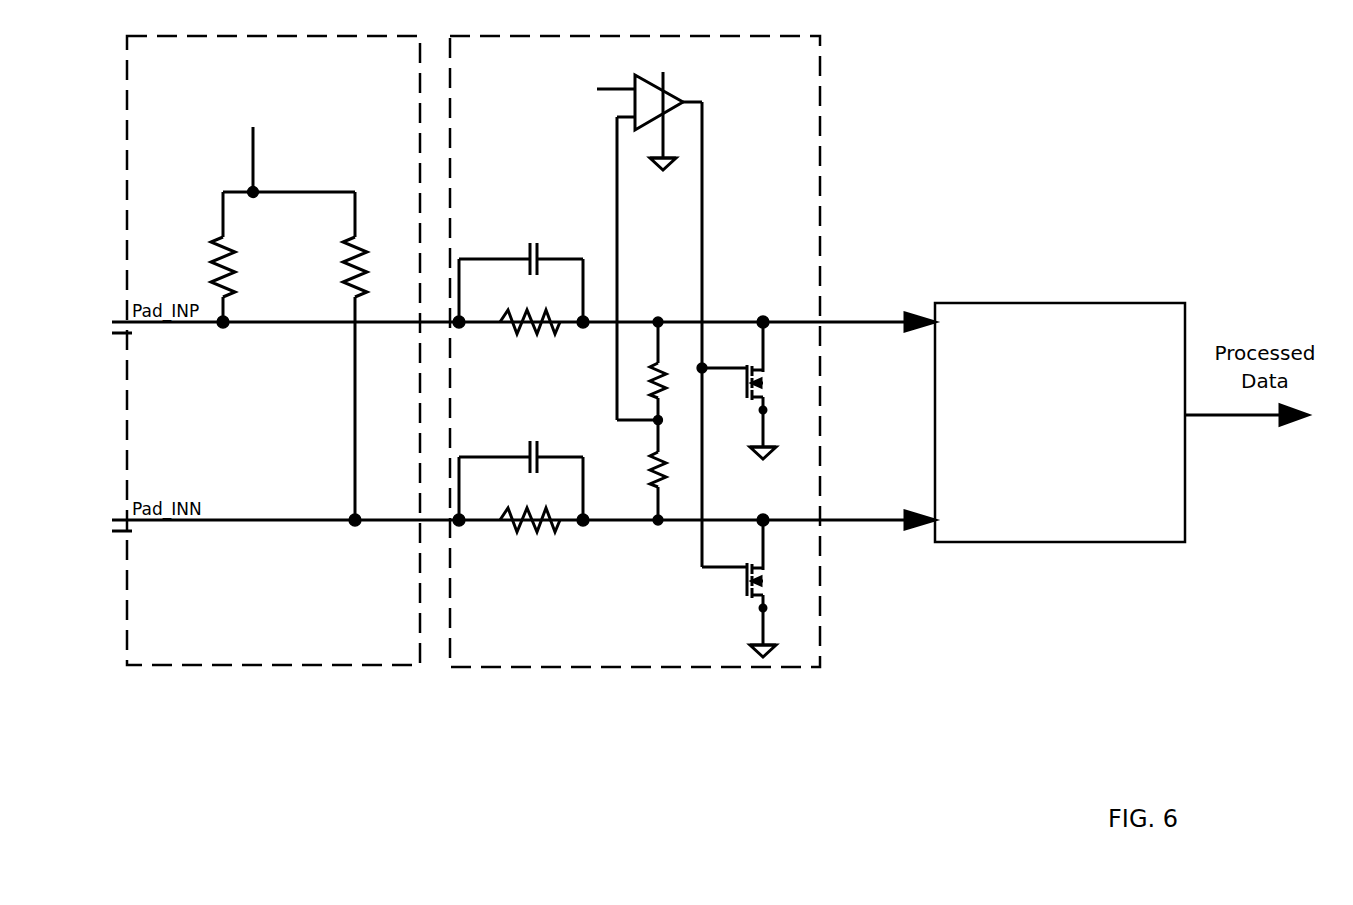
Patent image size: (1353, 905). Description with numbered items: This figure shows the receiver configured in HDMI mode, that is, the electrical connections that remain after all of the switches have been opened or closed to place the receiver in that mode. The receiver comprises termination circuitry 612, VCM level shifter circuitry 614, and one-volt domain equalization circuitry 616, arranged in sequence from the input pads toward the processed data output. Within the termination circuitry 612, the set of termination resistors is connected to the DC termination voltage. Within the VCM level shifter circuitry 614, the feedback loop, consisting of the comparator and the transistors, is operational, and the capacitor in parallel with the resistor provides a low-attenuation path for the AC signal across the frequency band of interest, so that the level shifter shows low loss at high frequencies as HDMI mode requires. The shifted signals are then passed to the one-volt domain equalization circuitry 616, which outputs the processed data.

The termination circuitry 612 is at (273, 350).
The VCM level shifter circuitry 614 is at (635, 351).
The 1-V domain equalization circuitry 616 is at (1060, 422).